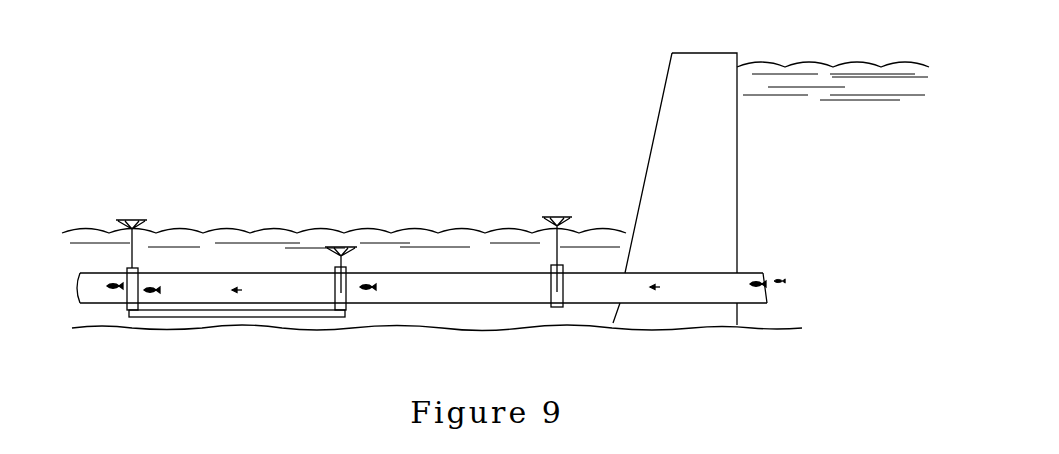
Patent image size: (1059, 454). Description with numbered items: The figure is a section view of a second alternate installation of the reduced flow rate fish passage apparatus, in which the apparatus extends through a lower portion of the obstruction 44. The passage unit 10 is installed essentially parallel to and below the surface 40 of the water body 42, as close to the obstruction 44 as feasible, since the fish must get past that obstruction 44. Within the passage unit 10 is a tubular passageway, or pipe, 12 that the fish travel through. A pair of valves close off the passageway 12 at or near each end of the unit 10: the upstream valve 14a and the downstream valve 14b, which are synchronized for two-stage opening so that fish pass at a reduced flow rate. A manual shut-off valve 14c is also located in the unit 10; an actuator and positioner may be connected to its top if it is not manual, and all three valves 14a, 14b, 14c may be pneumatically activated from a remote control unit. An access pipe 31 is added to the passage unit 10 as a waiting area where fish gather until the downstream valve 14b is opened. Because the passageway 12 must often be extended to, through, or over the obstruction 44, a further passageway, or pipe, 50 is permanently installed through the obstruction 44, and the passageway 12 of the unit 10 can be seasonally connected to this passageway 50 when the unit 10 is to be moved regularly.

The passage unit 10 is at (236, 320).
The passageway 12 is at (271, 279).
The upstream valve 14a is at (339, 241).
The downstream valve 14b is at (129, 213).
The manual shut-off valve 14c is at (553, 221).
The access pipe 31 is at (103, 283).
The surface 40 is at (204, 230).
The water body 42 is at (57, 262).
The obstruction 44 is at (675, 148).
The passageway 50 is at (480, 305).